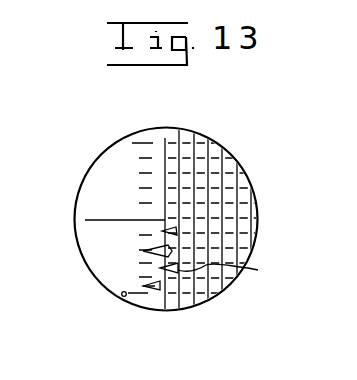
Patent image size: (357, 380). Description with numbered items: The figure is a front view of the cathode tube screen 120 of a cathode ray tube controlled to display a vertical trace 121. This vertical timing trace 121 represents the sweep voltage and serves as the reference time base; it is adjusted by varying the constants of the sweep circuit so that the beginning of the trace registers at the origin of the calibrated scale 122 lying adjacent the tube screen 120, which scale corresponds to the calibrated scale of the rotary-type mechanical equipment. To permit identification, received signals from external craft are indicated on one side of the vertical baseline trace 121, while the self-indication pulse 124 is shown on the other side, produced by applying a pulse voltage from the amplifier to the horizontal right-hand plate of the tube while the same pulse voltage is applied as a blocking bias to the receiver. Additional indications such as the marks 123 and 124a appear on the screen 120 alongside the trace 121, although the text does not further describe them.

The cathode tube screen 120 is at (246, 178).
The vertical trace 121 is at (177, 150).
The calibrated scale 122 is at (136, 219).
The recording pointer 123 is at (170, 233).
The self-indication pulse 124 is at (162, 247).
The lower pointer 124a is at (158, 286).